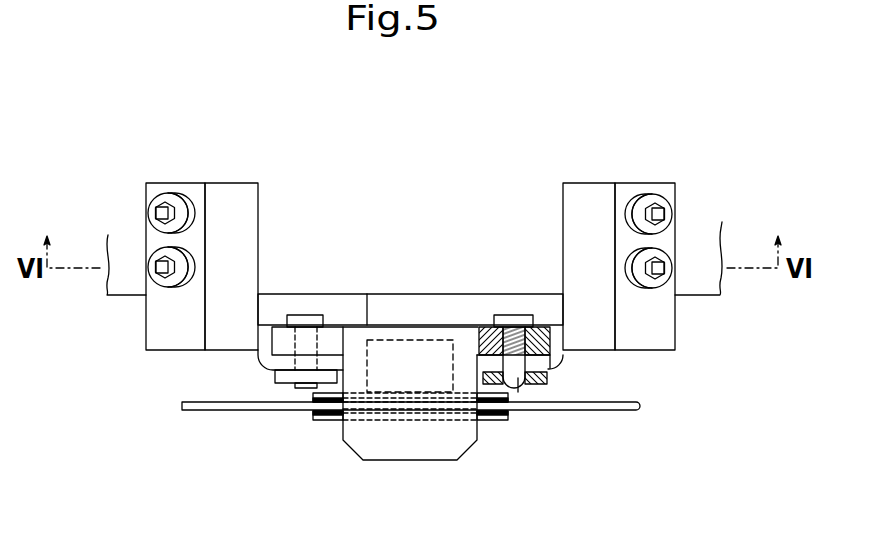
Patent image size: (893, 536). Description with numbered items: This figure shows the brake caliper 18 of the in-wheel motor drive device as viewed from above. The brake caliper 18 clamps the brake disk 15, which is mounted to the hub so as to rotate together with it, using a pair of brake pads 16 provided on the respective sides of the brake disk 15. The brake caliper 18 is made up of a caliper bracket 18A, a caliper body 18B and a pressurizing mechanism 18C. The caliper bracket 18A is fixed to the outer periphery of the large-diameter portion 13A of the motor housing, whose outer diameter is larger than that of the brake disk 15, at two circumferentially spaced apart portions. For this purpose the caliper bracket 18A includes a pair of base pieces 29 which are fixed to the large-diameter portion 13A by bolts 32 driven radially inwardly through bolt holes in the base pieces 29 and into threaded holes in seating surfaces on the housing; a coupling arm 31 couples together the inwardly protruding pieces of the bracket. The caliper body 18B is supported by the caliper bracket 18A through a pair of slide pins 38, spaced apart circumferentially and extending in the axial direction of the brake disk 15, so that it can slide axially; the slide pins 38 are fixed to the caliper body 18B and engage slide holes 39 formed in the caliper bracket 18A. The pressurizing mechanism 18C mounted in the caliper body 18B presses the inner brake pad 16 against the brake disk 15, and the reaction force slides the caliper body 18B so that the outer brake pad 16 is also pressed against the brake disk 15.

The large-diameter portion 13A is at (115, 298).
The brake disk 15 is at (194, 412).
The brake pads 16 is at (318, 403).
The brake caliper 18 is at (676, 330).
The caliper bracket 18A is at (145, 341).
The caliper body 18B is at (367, 294).
The pressurizing mechanism 18C is at (410, 357).
The base pieces 29 is at (226, 198).
The coupling arm 31 is at (555, 323).
The bolts 32 is at (147, 257).
The slide pins 38 is at (296, 390).
The slide holes 39 is at (518, 392).